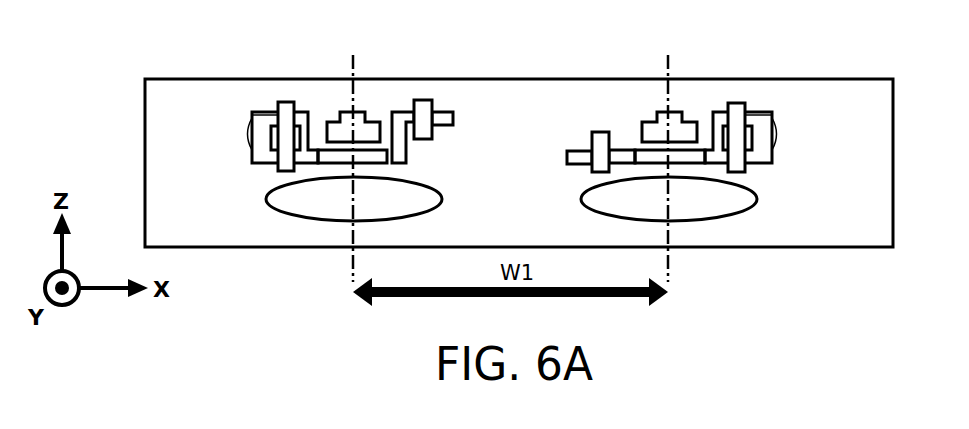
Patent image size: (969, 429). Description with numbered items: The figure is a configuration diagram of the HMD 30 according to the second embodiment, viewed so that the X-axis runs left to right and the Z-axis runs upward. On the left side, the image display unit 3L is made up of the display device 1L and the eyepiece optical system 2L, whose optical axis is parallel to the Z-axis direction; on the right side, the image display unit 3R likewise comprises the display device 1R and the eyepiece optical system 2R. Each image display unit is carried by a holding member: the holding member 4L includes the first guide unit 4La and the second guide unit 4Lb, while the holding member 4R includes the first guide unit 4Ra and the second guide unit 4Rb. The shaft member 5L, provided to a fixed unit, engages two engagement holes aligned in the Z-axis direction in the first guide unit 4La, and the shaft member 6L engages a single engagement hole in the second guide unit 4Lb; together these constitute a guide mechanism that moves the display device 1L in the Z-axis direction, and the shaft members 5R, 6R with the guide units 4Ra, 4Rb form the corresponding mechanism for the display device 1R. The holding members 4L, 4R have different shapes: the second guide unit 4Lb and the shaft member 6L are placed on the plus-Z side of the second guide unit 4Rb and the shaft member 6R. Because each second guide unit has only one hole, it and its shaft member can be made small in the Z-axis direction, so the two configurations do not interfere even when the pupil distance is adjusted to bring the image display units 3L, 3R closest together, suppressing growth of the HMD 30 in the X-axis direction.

The HMD 30 is at (175, 58).
The display device 1L is at (330, 166).
The eyepiece optical system 2L is at (268, 207).
The image display unit 3L is at (305, 194).
The holding member 4L is at (336, 127).
The first guide unit 4La is at (252, 150).
The second guide unit 4Lb is at (453, 118).
The shaft member 5L is at (286, 101).
The shaft member 6L is at (422, 100).
The display device 1R is at (693, 167).
The eyepiece optical system 2R is at (757, 207).
The image display unit 3R is at (726, 194).
The holding member 4R is at (688, 128).
The first guide unit 4Ra is at (773, 152).
The second guide unit 4Rb is at (567, 155).
The shaft member 5R is at (736, 103).
The shaft member 6R is at (602, 132).